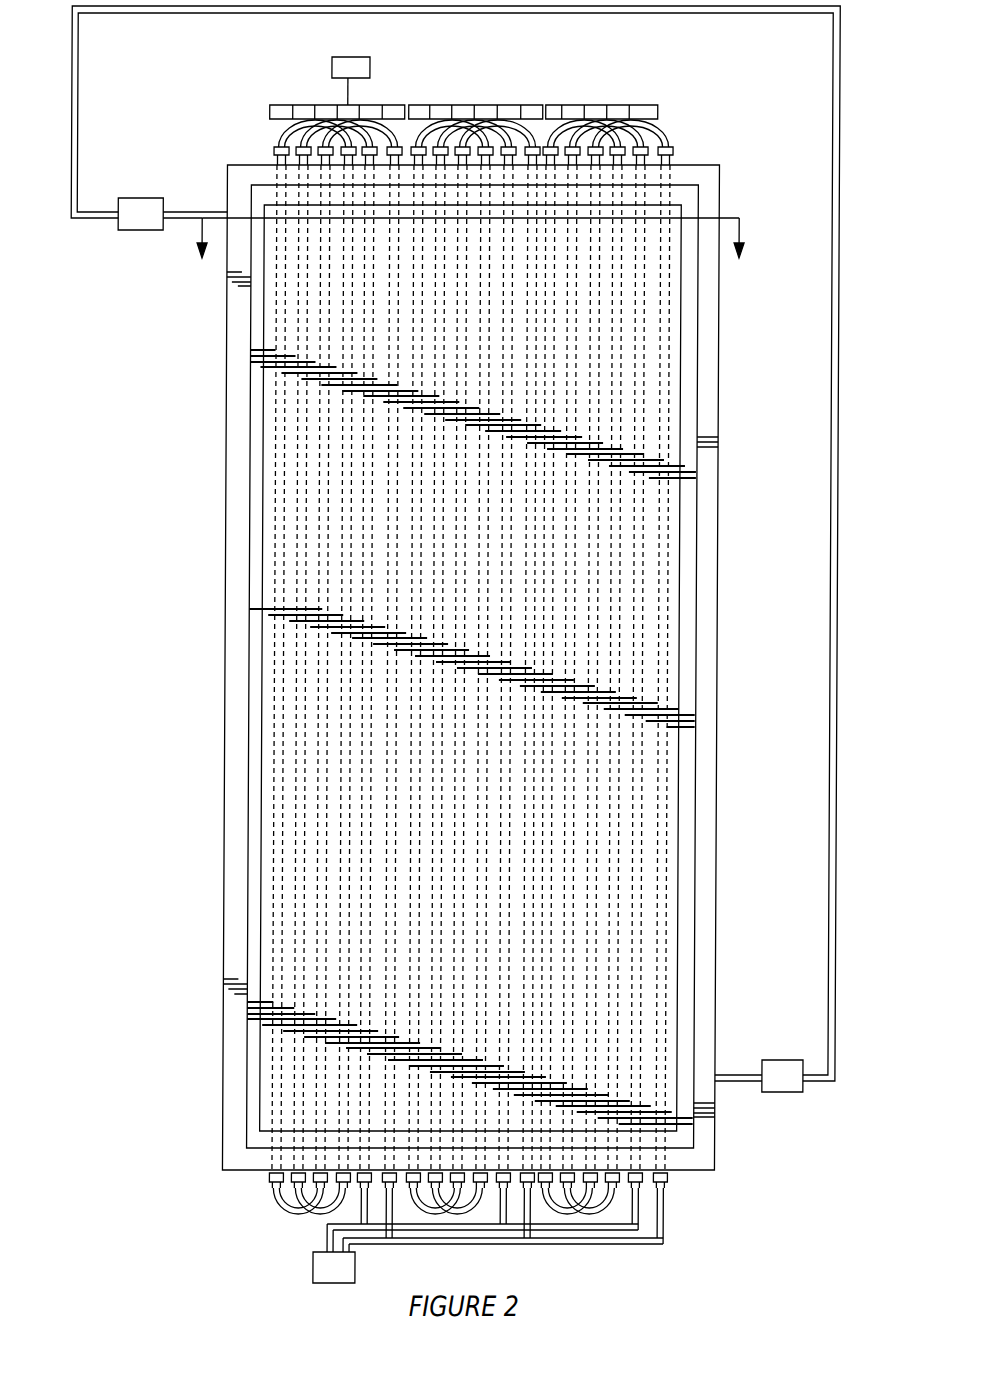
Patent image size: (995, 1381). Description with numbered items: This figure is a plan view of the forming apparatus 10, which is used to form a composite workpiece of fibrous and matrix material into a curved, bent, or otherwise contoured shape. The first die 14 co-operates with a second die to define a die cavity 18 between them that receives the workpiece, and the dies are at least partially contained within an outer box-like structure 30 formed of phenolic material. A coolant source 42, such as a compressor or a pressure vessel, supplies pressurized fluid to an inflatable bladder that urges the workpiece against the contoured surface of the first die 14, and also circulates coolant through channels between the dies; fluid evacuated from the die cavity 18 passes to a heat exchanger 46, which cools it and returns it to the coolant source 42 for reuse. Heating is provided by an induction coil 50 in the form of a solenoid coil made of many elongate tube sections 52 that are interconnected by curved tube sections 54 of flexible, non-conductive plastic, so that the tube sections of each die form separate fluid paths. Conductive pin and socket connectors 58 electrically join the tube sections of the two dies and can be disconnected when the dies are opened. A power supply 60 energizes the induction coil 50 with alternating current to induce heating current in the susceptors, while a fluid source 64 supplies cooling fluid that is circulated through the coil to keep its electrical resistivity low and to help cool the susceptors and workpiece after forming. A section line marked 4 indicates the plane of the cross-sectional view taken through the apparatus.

The forming apparatus 10 is at (140, 406).
The first die 14 is at (247, 904).
The die cavity 18 is at (368, 740).
The box-like structure 30 is at (232, 992).
The coolant source 42 is at (138, 230).
The heat exchanger 46 is at (792, 1095).
The induction coil 50 is at (254, 1237).
The elongate tube section 52 is at (272, 1143).
The curved tube section 54 is at (272, 1200).
The socket connector 58 is at (672, 150).
The power supply 60 is at (330, 62).
The fluid source 64 is at (316, 1262).
The section line 4- 4 is at (471, 258).